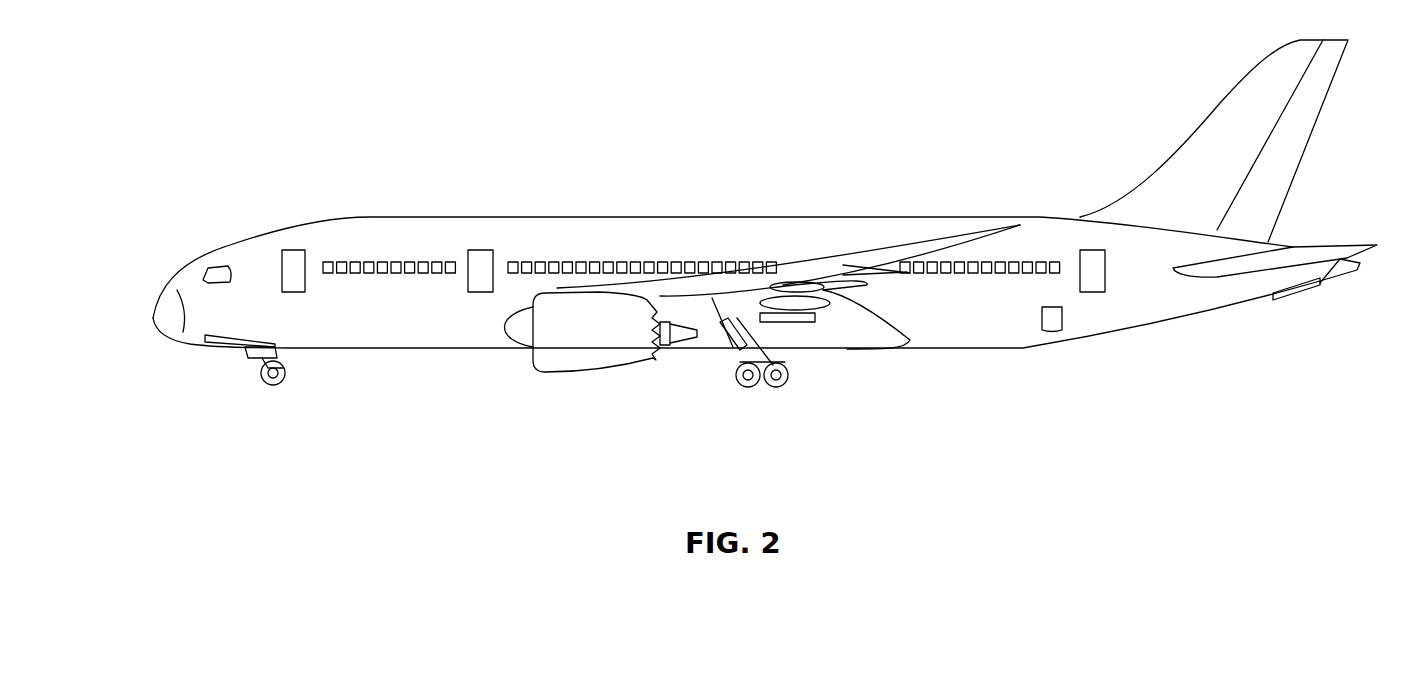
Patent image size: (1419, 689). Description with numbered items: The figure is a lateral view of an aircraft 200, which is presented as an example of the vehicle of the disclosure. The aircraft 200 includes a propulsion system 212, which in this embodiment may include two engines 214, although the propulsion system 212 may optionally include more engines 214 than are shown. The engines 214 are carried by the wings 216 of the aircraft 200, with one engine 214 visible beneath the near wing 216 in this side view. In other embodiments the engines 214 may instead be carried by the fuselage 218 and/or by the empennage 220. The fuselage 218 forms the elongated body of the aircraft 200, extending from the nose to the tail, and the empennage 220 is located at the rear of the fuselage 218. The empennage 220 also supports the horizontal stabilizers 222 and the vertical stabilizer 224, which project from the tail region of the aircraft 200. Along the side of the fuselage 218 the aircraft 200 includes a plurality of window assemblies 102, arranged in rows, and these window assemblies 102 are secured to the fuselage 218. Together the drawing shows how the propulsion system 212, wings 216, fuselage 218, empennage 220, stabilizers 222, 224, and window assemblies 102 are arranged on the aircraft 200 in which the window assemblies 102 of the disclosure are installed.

The aircraft 200 is at (203, 148).
The window assemblies 102 is at (723, 262).
The propulsion system 212 is at (548, 381).
The engines 214 is at (600, 375).
The wings 216 is at (708, 298).
The fuselage 218 is at (553, 230).
The empennage 220 is at (1110, 213).
The horizontal stabilizers 222 is at (1323, 102).
The vertical stabilizer 224 is at (1345, 240).